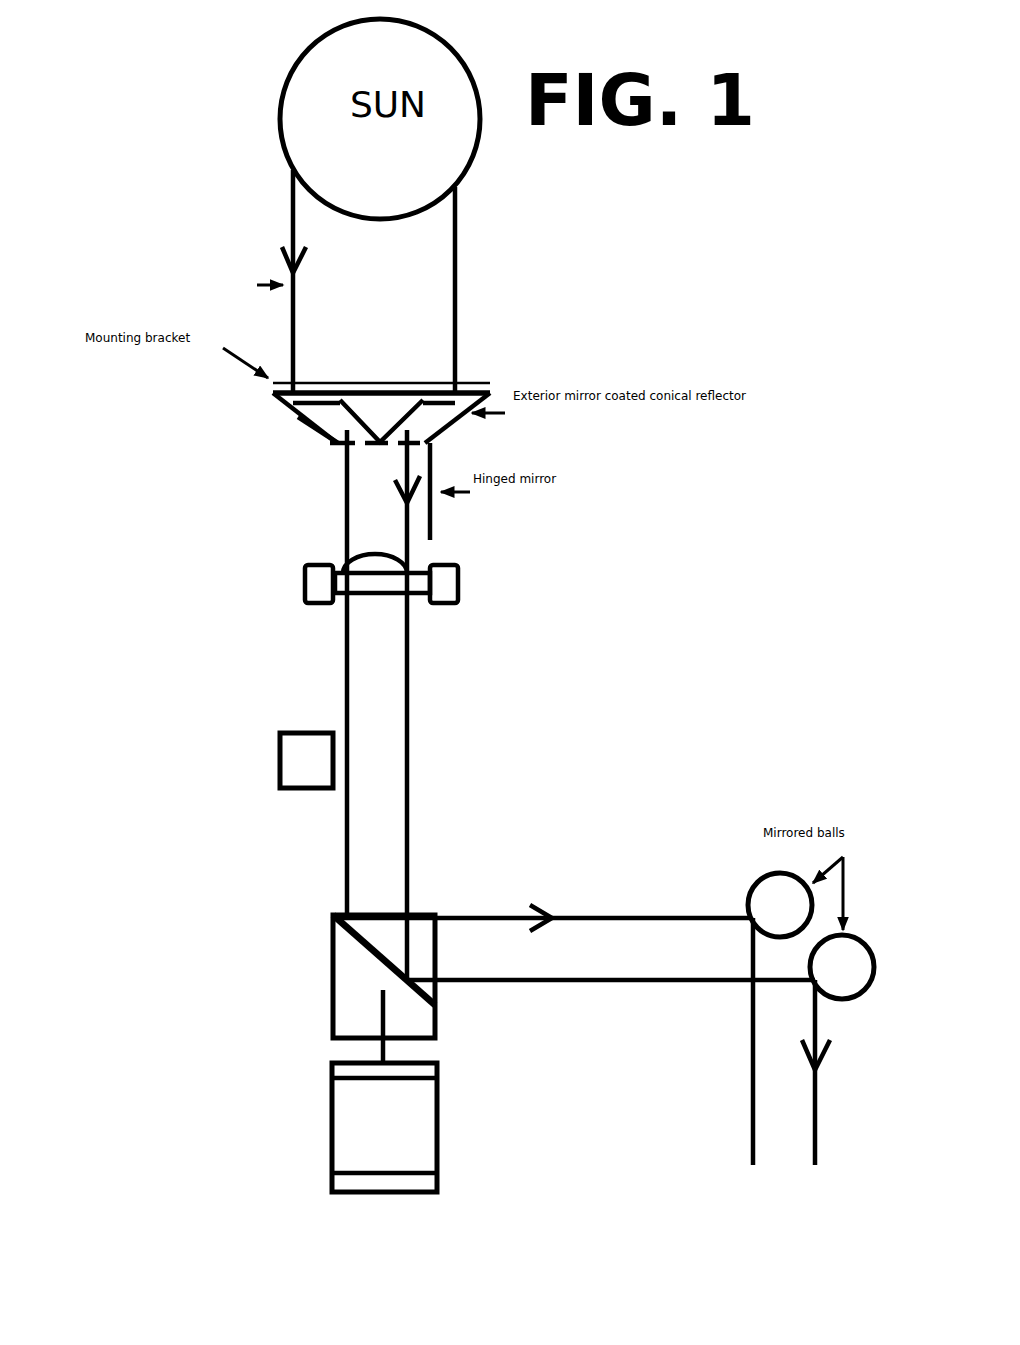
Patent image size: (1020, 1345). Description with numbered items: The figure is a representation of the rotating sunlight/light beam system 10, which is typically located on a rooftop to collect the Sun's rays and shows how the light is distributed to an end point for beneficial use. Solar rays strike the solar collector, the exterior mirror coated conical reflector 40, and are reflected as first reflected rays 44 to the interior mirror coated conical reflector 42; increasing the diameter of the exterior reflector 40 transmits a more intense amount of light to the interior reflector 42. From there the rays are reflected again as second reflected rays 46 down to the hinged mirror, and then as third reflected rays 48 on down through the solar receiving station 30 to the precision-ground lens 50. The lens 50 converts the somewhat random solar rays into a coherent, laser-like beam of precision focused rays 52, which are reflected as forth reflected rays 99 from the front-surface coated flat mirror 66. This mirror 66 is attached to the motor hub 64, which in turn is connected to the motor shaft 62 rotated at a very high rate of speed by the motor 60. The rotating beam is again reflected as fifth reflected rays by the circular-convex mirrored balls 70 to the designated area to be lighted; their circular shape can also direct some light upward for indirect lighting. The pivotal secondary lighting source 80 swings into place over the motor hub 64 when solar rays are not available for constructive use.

The system 10 is at (321, 1193).
The Solar receiving station complete with motorized tracking mechanism 30 is at (464, 562).
The exterior mirror coated conical reflector 40 is at (485, 381).
The interior mirror coated conical reflector 42 is at (458, 405).
The first reflected rays 44 is at (295, 417).
The second reflected rays 46 is at (343, 473).
The third reflected rays 48 is at (343, 545).
The precision-ground lens 50 is at (416, 601).
The precision focused rays 52 is at (341, 630).
The motor 60 is at (328, 1160).
The motor shaft 62 is at (372, 1058).
The motor hub 64 is at (330, 1013).
The front-surface coated flat mirror 66 is at (392, 950).
The circular-convex mirrored balls 70 is at (748, 1158).
The pivotal secondary lighting source 80 is at (278, 774).
The forth reflected rays 99 is at (684, 988).